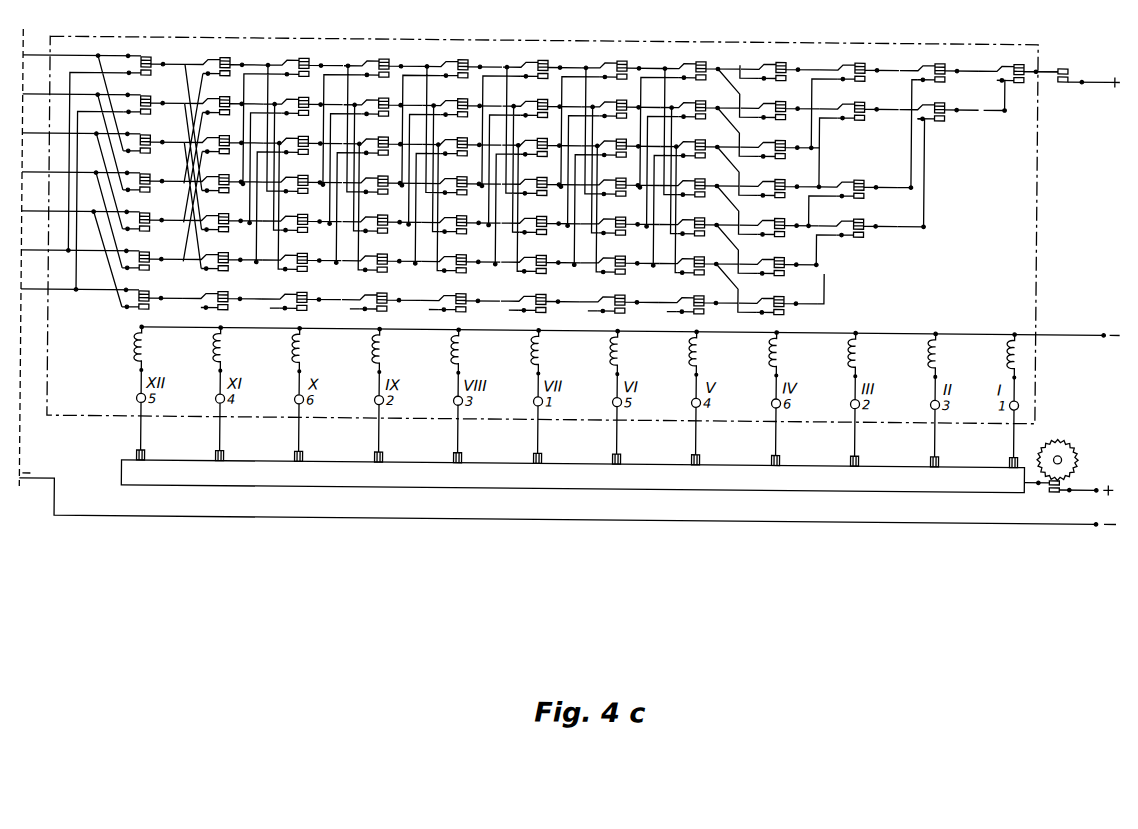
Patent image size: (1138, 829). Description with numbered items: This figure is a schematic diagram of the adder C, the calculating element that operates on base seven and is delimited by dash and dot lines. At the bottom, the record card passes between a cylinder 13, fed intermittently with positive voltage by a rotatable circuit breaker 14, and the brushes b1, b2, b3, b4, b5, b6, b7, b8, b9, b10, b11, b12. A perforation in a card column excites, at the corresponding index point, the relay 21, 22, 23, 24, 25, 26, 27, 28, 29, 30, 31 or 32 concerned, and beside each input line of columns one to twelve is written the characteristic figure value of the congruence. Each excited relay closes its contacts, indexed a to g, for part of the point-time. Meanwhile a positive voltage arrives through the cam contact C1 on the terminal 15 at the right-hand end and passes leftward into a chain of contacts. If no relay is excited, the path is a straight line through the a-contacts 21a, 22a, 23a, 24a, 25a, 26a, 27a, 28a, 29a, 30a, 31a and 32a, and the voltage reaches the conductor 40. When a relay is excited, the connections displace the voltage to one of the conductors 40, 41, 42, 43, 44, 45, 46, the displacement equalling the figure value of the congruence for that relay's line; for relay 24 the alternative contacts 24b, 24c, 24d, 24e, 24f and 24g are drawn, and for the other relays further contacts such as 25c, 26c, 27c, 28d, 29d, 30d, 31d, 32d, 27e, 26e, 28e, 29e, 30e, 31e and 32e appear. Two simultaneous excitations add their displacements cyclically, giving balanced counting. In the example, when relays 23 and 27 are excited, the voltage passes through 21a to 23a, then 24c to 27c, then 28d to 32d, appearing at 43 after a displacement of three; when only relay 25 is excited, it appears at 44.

The conductor 40 is at (82, 47).
The conductor 41 is at (82, 86).
The conductor 42 is at (81, 125).
The conductor 43 is at (81, 164).
The conductor 44 is at (81, 203).
The conductor 45 is at (80, 242).
The conductor 46 is at (80, 281).
The relay contact 32a is at (153, 56).
The relay contact 32d is at (153, 173).
The relay contact 32e is at (153, 212).
The relay contact 31a is at (232, 56).
The relay contact 31d is at (232, 173).
The relay contact 31e is at (232, 212).
The relay contact 30a is at (311, 56).
The relay contact 30d is at (311, 173).
The relay contact 30e is at (311, 212).
The relay contact 29a is at (391, 56).
The relay contact 29d is at (391, 173).
The relay contact 29e is at (391, 212).
The relay contact 28a is at (470, 56).
The relay contact 28d is at (470, 173).
The relay contact 28e is at (470, 212).
The relay contact 27a is at (550, 56).
The relay contact 27c is at (550, 134).
The relay contact 27e is at (550, 212).
The relay contact 26a is at (629, 56).
The relay contact 26c is at (629, 134).
The relay contact 26e is at (629, 212).
The relay contact 25a is at (708, 56).
The relay contact 25c is at (708, 134).
The relay contact 24a is at (788, 56).
The relay contact 24b is at (788, 95).
The relay contact 24c is at (788, 134).
The relay contact 24d is at (788, 173).
The relay contact 24e is at (788, 212).
The relay contact 24f is at (788, 251).
The relay contact 24g is at (788, 290).
The relay contact 23a is at (867, 56).
The relay contact 22a is at (947, 56).
The relay contact 21a is at (1026, 56).
The terminal 15 is at (1046, 65).
The cam contact C1 is at (1072, 68).
The adder C is at (1043, 247).
The relay 32 is at (146, 349).
The relay 31 is at (225, 349).
The relay 30 is at (304, 349).
The relay 29 is at (384, 349).
The relay 28 is at (463, 349).
The relay 27 is at (543, 349).
The relay 26 is at (622, 349).
The relay 25 is at (701, 349).
The relay 24 is at (781, 349).
The relay 23 is at (860, 349).
The relay 22 is at (940, 349).
The relay 21 is at (1012, 350).
The brush b12 is at (154, 451).
The brush b11 is at (233, 452).
The brush b10 is at (312, 452).
The brush b9 is at (388, 453).
The brush b8 is at (467, 454).
The brush b7 is at (547, 454).
The brush b6 is at (626, 455).
The brush b5 is at (705, 456).
The brush b4 is at (785, 456).
The brush b3 is at (863, 457).
The brush b2 is at (943, 458).
The brush b1 is at (1012, 452).
The cylinder 13 is at (914, 484).
The rotatable circuit breaker 14 is at (1075, 437).